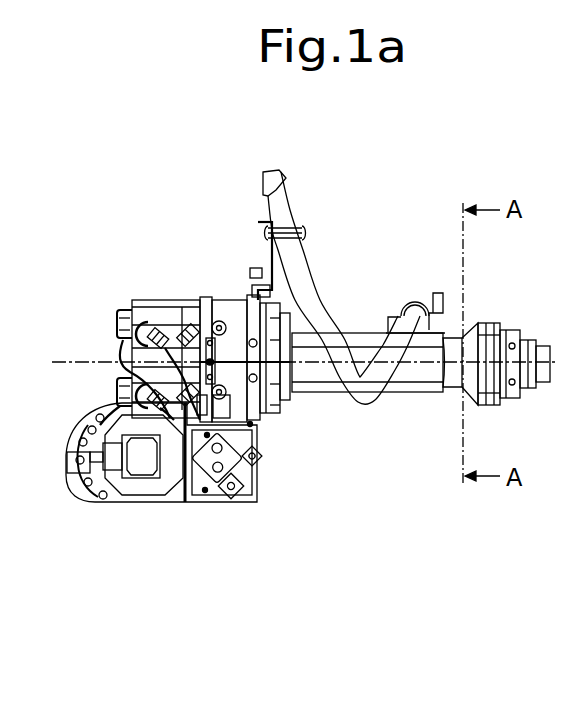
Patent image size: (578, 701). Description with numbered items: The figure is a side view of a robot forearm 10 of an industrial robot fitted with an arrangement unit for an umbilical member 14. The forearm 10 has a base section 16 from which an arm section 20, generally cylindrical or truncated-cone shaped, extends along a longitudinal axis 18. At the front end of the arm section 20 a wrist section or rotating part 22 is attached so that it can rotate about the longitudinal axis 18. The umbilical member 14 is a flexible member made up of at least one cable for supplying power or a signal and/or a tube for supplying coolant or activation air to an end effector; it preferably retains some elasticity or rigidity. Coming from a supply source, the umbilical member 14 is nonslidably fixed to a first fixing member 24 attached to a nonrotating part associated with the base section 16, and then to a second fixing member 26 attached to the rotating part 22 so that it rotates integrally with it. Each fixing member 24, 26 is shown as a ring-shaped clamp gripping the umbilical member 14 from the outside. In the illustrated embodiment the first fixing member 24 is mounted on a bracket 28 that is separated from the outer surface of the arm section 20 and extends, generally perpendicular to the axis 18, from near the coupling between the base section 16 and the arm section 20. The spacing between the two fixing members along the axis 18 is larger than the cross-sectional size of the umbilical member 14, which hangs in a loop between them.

The forearm 10 is at (191, 527).
The umbilical member 14 is at (341, 260).
The base section 16 is at (145, 279).
The longitudinal axis 18 is at (83, 358).
The arm section 20 is at (413, 385).
The rotating part 22 is at (512, 400).
The first fixing member 24 is at (303, 225).
The second fixing member 26 is at (413, 290).
The bracket 28 is at (263, 265).